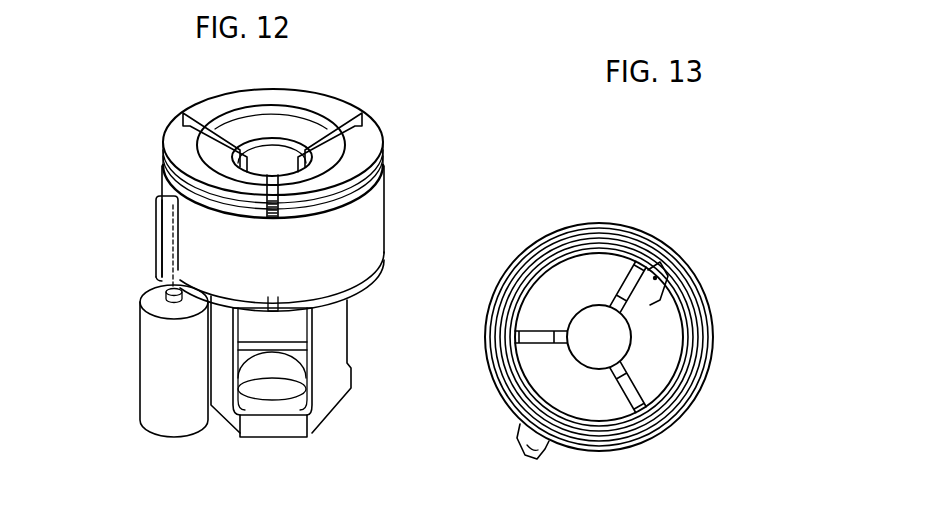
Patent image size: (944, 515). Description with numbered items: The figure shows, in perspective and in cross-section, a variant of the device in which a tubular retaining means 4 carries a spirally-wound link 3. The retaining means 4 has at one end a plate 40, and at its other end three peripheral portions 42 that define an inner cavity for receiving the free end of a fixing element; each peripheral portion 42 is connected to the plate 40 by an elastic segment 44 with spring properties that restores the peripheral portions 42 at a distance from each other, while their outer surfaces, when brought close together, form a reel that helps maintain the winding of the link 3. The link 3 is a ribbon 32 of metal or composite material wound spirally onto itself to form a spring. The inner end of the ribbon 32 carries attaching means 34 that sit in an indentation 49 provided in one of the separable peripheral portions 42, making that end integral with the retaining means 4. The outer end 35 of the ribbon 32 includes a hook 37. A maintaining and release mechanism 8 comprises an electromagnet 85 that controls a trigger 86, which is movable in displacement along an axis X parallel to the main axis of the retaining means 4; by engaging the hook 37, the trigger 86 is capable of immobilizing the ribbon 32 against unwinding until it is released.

In FIG. 12, the link 3 is at (401, 176).
In FIG. 13, the link 3 is at (689, 242).
In FIG. 12, the retaining means 4 is at (361, 322).
In FIG. 12, the maintaining and release mechanism 8 is at (114, 393).
In FIG. 12, the ribbon 32 is at (368, 225).
In FIG. 13, the ribbon 32 is at (602, 225).
In FIG. 13, the attaching means 34 is at (666, 250).
In FIG. 12, the outer end 35 is at (137, 208).
In FIG. 12, the hook 37 is at (165, 222).
In FIG. 13, the hook 37 is at (533, 440).
In FIG. 12, the plate 40 is at (280, 427).
In FIG. 12, the peripheral portions 42 is at (188, 144).
In FIG. 13, the peripheral portions 42 is at (548, 367).
In FIG. 12, the elastic segment 44 is at (327, 357).
In FIG. 13, the indentation 49 is at (672, 312).
In FIG. 12, the electromagnet 85 is at (153, 352).
In FIG. 12, the trigger 86 is at (173, 295).
In FIG. 12, the axis X is at (173, 207).